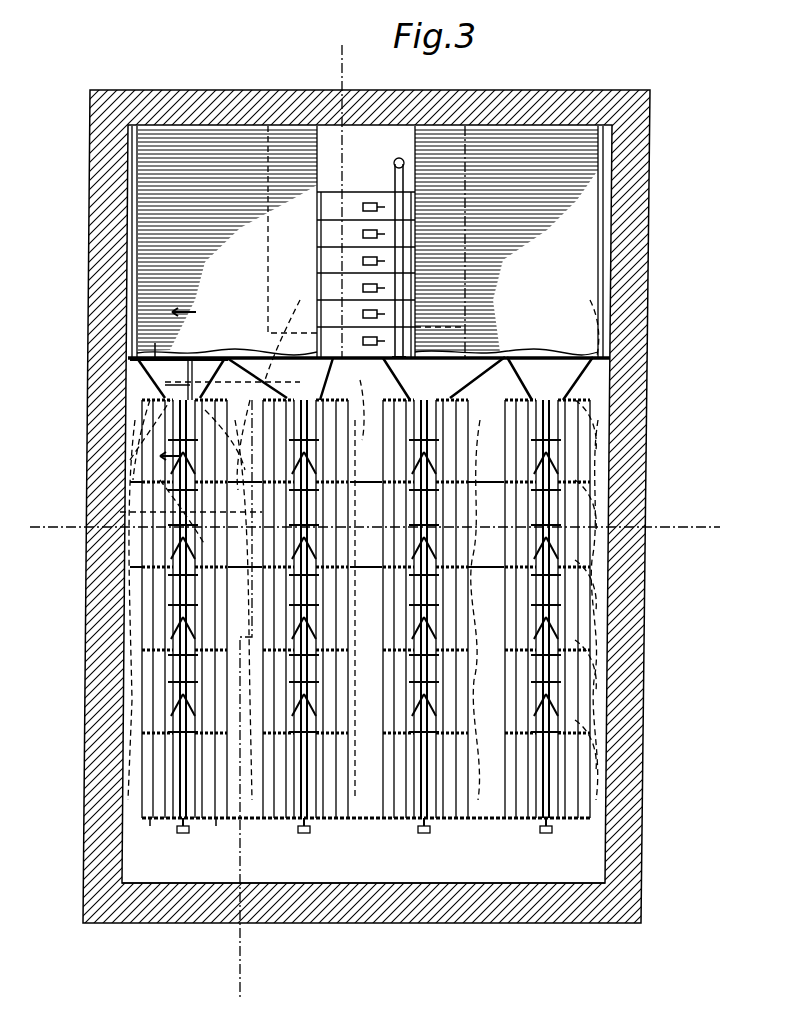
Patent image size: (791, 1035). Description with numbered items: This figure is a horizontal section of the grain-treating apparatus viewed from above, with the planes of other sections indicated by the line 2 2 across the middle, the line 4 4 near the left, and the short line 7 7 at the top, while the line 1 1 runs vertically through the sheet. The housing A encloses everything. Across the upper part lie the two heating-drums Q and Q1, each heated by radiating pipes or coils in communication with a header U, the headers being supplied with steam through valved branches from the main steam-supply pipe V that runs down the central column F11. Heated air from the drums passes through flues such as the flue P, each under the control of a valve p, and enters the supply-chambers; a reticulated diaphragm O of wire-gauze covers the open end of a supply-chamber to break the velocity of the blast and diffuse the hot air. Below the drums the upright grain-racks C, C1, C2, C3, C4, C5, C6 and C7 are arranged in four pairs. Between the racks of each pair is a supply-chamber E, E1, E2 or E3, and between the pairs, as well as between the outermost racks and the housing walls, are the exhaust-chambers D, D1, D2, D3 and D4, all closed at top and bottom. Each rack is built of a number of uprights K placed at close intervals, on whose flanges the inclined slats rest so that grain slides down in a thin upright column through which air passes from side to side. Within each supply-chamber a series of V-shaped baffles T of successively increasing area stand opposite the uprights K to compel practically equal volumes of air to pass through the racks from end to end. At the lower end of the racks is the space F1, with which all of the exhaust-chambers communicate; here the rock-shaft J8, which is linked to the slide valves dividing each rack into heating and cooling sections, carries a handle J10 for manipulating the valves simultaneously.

The housing A is at (348, 506).
The central flue column F11 is at (366, 242).
The header U is at (363, 274).
The main steam-supply pipe V is at (405, 263).
The heating-drum Q is at (227, 239).
The heating-drum Q1 is at (506, 242).
The flue P is at (188, 365).
The reticulated diaphragm O is at (200, 373).
The valve p is at (147, 339).
The section line 1- 1 is at (346, 72).
The section line 2 2 is at (64, 518).
The section line 4 4 is at (122, 504).
The section line 7 7 is at (175, 419).
The grain-rack C is at (157, 609).
The grain-rack C1 is at (211, 609).
The grain-rack C2 is at (278, 609).
The grain-rack C3 is at (332, 609).
The grain-rack C4 is at (398, 609).
The grain-rack C5 is at (452, 609).
The grain-rack C6 is at (520, 609).
The grain-rack C7 is at (574, 609).
The supply-chamber E is at (178, 616).
The supply-chamber E1 is at (300, 616).
The supply-chamber E2 is at (420, 616).
The supply-chamber E3 is at (541, 616).
The exhaust-chamber D is at (125, 628).
The exhaust-chamber D1 is at (241, 610).
The exhaust-chamber D2 is at (360, 610).
The exhaust-chamber D3 is at (480, 610).
The exhaust-chamber D4 is at (600, 610).
The upright K is at (142, 481).
The baffle T is at (190, 470).
The end space F1 is at (363, 862).
The rock-shaft J8 is at (152, 826).
The handle J10 is at (214, 826).